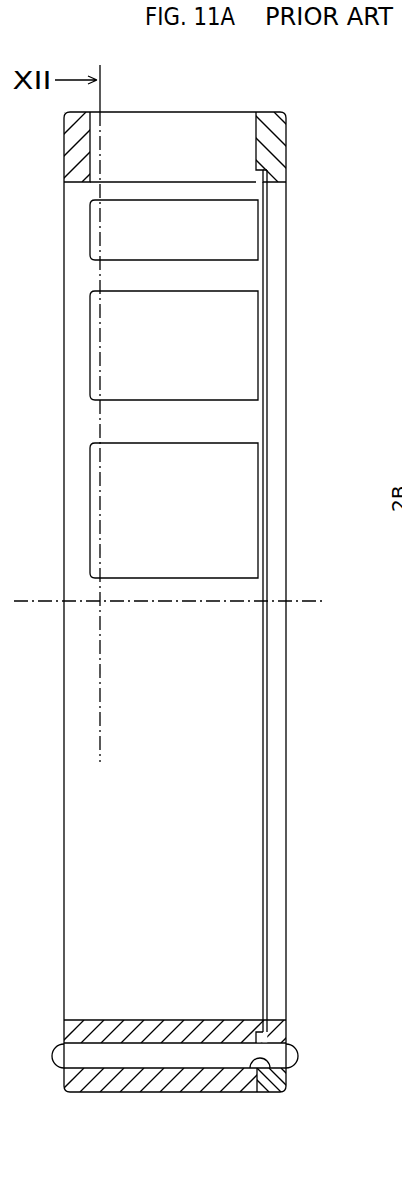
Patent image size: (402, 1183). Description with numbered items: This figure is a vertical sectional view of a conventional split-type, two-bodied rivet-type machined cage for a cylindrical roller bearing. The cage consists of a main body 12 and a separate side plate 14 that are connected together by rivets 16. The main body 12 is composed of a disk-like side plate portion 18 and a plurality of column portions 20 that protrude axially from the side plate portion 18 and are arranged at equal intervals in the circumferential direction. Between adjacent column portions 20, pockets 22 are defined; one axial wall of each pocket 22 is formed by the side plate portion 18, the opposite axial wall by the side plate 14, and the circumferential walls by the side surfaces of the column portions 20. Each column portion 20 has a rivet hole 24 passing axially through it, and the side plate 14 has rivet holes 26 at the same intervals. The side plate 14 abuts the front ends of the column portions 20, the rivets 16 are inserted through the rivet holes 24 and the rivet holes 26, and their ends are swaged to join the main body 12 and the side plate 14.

The main body 12 is at (105, 1085).
The side plate 14 is at (275, 1086).
The rivets 16 is at (162, 1058).
The side plate portion 18 is at (70, 148).
The column portions 20 is at (155, 124).
The pockets 22 is at (216, 128).
The rivet hole 24 is at (138, 1048).
The rivet holes 26 is at (253, 1062).